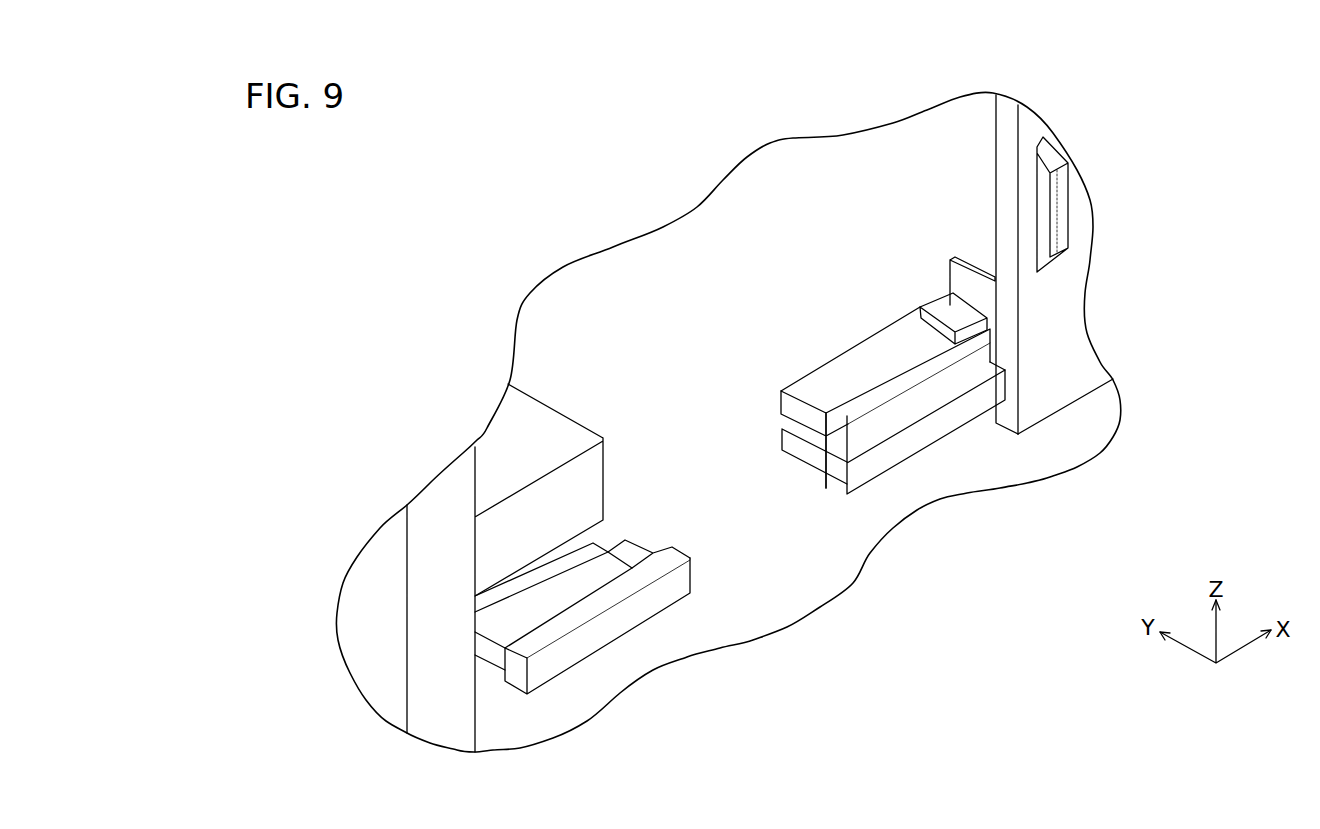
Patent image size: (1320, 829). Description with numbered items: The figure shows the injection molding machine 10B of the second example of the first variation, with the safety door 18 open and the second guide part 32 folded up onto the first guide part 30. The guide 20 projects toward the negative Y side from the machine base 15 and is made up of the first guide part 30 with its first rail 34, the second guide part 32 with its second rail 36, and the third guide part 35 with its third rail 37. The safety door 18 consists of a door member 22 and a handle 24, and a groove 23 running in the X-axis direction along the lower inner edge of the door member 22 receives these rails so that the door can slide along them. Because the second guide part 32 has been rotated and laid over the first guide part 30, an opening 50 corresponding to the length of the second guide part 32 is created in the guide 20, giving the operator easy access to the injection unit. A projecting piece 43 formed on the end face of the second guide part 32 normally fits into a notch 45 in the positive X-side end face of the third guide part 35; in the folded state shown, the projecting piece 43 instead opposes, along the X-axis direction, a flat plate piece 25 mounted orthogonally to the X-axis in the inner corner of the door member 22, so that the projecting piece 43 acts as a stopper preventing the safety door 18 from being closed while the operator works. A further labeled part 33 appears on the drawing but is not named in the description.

The injection molding machine 10B is at (855, 162).
The machine base 15 is at (842, 563).
The safety door 18 is at (1163, 170).
The guide 20 is at (820, 313).
The door member 22 is at (1065, 283).
The groove 23 is at (1002, 386).
The handle 24 is at (1065, 187).
The flat plate piece 25 is at (965, 280).
The first guide part 30 is at (814, 480).
The second guide part 32 is at (871, 366).
The lower protrusion 33 is at (838, 477).
The first rail 34 is at (922, 442).
The third guide part 35 is at (560, 549).
The second rail 36 is at (910, 380).
The third rail 37 is at (625, 620).
The projecting piece 43 is at (958, 316).
The notch 45 is at (631, 542).
The opening 50 is at (763, 539).